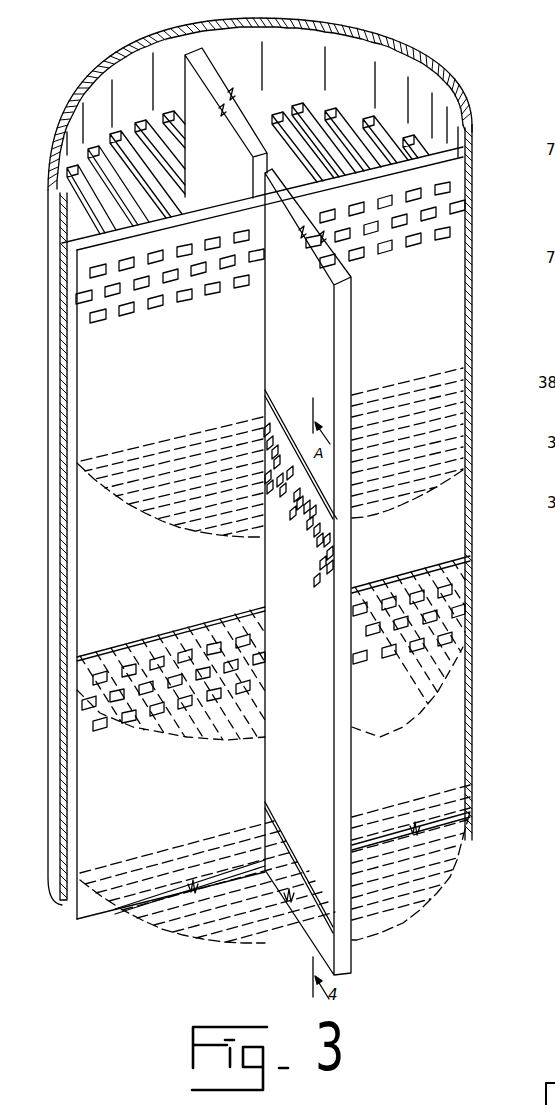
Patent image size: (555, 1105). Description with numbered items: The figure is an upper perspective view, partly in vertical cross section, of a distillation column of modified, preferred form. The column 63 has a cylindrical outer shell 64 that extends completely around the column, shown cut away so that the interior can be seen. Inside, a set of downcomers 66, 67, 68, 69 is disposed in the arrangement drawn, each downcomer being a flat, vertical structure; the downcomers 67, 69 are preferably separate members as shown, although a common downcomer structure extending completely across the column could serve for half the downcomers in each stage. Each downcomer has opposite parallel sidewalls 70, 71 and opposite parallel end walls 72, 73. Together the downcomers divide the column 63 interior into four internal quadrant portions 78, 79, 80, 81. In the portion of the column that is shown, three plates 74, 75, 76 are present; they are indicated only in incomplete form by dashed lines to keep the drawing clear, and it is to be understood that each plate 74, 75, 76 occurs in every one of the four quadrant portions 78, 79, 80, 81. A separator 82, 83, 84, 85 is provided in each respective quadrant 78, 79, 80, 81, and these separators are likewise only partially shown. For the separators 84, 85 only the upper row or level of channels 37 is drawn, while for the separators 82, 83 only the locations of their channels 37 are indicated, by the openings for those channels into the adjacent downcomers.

The channels 37 is at (293, 103).
The column 63 is at (448, 64).
The outer shell 64 is at (473, 120).
The downcomer 66 is at (97, 397).
The downcomer 67 is at (353, 333).
The downcomer 68 is at (459, 318).
The downcomer 69 is at (192, 78).
The sidewall 70 is at (93, 342).
The sidewall 71 is at (118, 229).
The end wall 72 is at (70, 438).
The end wall 73 is at (266, 351).
The plate 74 is at (449, 477).
The plate 75 is at (447, 692).
The plate 76 is at (446, 872).
The quadrant portion 78 is at (182, 595).
The quadrant portion 79 is at (412, 553).
The quadrant portion 80 is at (360, 83).
The quadrant portion 81 is at (140, 100).
The separator 82 is at (165, 320).
The separator 83 is at (391, 265).
The separator 84 is at (383, 116).
The separator 85 is at (93, 135).